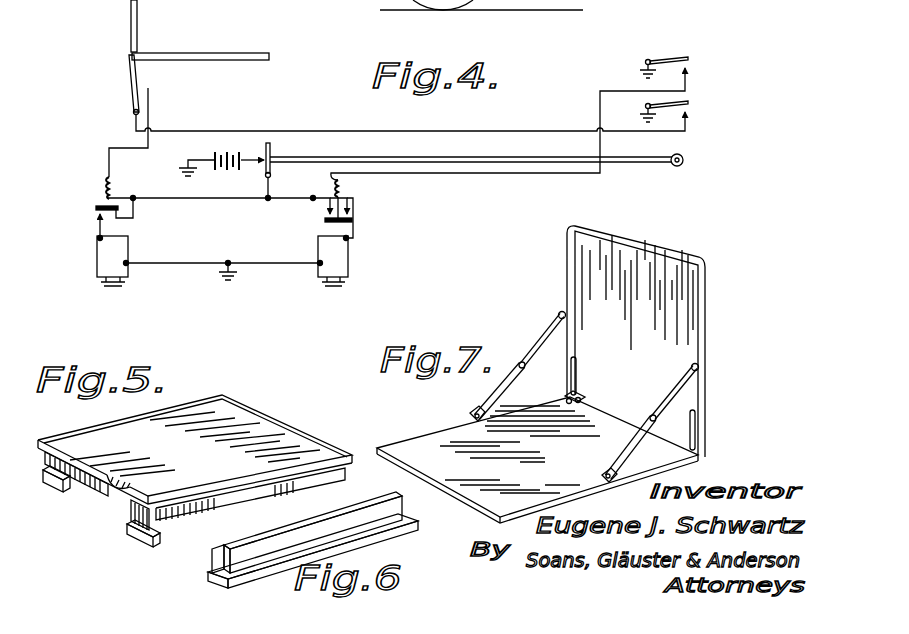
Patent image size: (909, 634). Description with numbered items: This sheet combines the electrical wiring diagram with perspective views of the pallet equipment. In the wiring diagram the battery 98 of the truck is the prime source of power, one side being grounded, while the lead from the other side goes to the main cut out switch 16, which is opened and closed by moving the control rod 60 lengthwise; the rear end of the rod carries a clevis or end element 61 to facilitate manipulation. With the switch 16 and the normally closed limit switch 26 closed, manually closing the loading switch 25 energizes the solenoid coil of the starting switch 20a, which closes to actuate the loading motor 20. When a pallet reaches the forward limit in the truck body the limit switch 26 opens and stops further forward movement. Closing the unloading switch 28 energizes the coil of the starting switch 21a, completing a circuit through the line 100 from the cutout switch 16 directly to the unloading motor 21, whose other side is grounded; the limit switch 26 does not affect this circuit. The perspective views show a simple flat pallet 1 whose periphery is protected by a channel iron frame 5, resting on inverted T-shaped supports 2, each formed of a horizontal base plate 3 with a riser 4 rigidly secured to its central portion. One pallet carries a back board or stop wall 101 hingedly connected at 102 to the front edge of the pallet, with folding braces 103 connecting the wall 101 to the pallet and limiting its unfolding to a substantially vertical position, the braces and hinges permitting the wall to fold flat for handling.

In FIG. 4, the pallet 1 is at (240, 53).
In FIG. 5, the pallet 1 is at (263, 428).
In FIG. 5, the support 2 is at (73, 492).
In FIG. 6, the support 2 is at (212, 560).
In FIG. 6, the horizontal base plate 3 is at (210, 578).
In FIG. 6, the riser 4 is at (261, 550).
In FIG. 5, the channel iron frame 5 is at (103, 484).
In FIG. 4, the cut out switch 16 is at (273, 150).
In FIG. 4, the loading motor 20 is at (96, 258).
In FIG. 4, the solenoid starting switch 20a is at (93, 212).
In FIG. 4, the unloading motor 21 is at (348, 262).
In FIG. 4, the solenoid starting switch 21a is at (360, 221).
In FIG. 4, the loading switch 25 is at (692, 110).
In FIG. 4, the limit switch 26 is at (147, 87).
In FIG. 4, the unloading motor switch 28 is at (691, 58).
In FIG. 4, the control rod 60 is at (552, 157).
In FIG. 4, the end element 61 is at (678, 167).
In FIG. 4, the battery 98 is at (218, 171).
In FIG. 4, the line 100 is at (299, 199).
In FIG. 7, the back board or stop wall 101 is at (706, 300).
In FIG. 7, the hinge 102 is at (565, 399).
In FIG. 7, the folding brace 103 is at (520, 366).